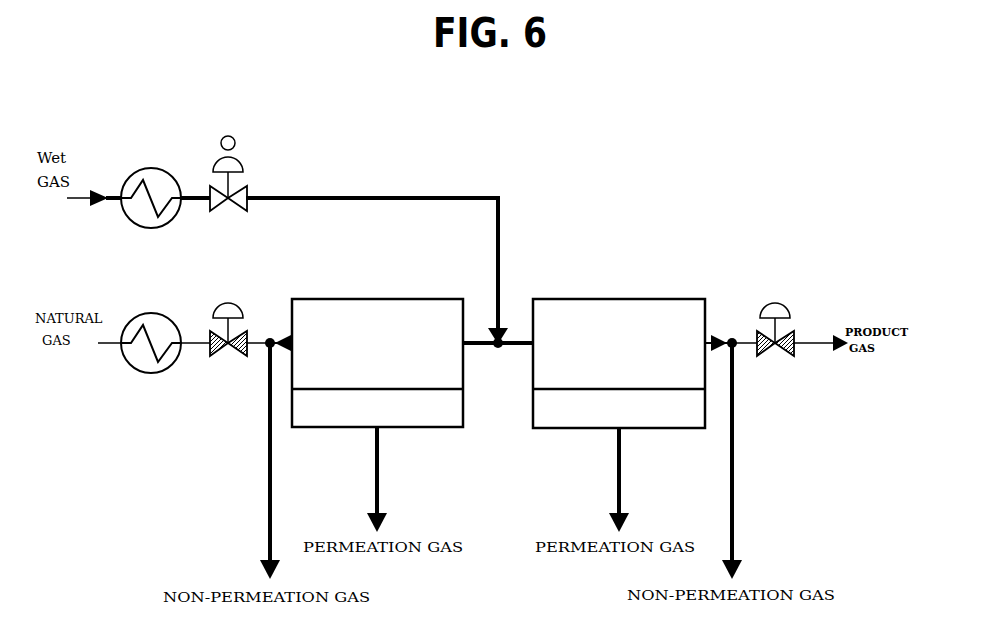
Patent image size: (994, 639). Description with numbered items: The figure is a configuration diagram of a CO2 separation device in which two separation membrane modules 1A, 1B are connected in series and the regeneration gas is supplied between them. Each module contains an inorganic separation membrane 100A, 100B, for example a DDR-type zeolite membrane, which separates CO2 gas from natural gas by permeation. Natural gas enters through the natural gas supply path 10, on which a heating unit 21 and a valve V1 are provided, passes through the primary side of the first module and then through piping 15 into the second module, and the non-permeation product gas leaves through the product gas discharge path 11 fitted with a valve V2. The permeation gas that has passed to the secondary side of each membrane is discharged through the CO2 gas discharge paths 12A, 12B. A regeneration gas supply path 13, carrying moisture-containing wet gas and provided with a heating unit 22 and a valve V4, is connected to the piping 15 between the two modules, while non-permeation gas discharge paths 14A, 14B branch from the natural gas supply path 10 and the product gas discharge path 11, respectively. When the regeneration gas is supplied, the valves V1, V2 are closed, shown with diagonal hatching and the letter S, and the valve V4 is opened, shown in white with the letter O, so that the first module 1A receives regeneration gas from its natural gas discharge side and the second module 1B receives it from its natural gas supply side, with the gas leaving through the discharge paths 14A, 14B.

The separation membrane module 1A is at (379, 298).
The separation membrane module 1B is at (620, 298).
The inorganic separation membrane 100A is at (351, 389).
The inorganic separation membrane 100B is at (593, 389).
The natural gas supply path 10 is at (274, 338).
The product gas discharge path 11 is at (729, 338).
The CO2 gas discharge path 12A is at (380, 476).
The CO2 gas discharge path 12B is at (616, 493).
The regeneration gas supply path 13 is at (502, 249).
The non-permeation gas discharge path 14A is at (267, 479).
The non-permeation gas discharge path 14B is at (736, 476).
The piping 15 is at (490, 348).
The heating unit 21 is at (150, 313).
The heating unit 22 is at (150, 168).
The valve V1 is at (228, 349).
The valve V2 is at (775, 349).
The valve V4 is at (228, 204).